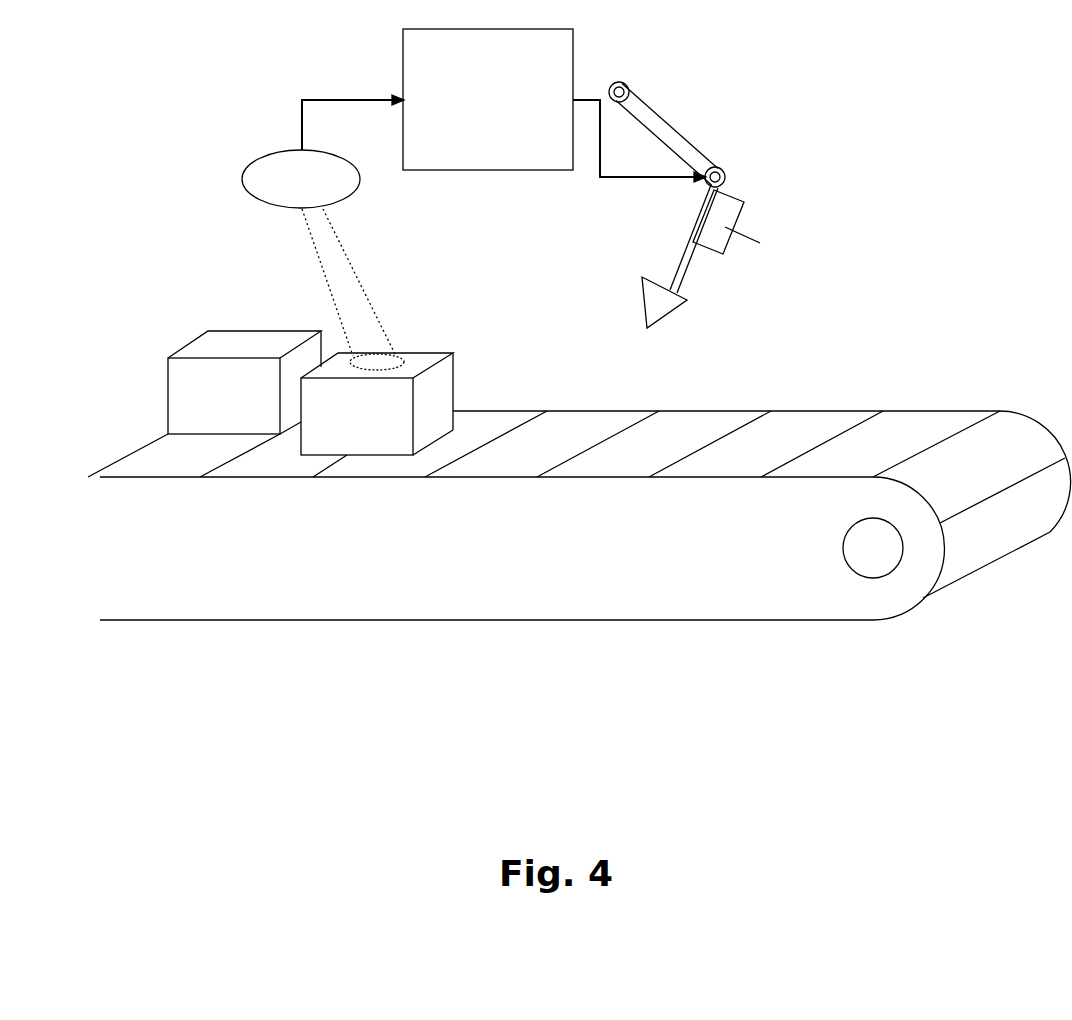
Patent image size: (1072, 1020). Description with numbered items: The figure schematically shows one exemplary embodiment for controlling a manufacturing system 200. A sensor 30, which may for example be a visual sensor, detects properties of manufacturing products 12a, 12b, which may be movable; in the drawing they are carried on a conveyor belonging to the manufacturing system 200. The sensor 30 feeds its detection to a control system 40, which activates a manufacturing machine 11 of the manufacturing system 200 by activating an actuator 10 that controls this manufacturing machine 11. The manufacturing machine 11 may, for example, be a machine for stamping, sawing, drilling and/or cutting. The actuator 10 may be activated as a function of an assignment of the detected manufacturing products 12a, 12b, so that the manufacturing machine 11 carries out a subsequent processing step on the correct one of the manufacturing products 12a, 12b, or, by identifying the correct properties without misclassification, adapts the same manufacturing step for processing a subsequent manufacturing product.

The control system 40 is at (388, 38).
The sensor 30 is at (242, 182).
The manufacturing machine 11 is at (685, 143).
The actuator 10 is at (742, 220).
The manufacturing product 12a is at (460, 382).
The manufacturing product 12b is at (187, 345).
The manufacturing system 200 is at (473, 623).